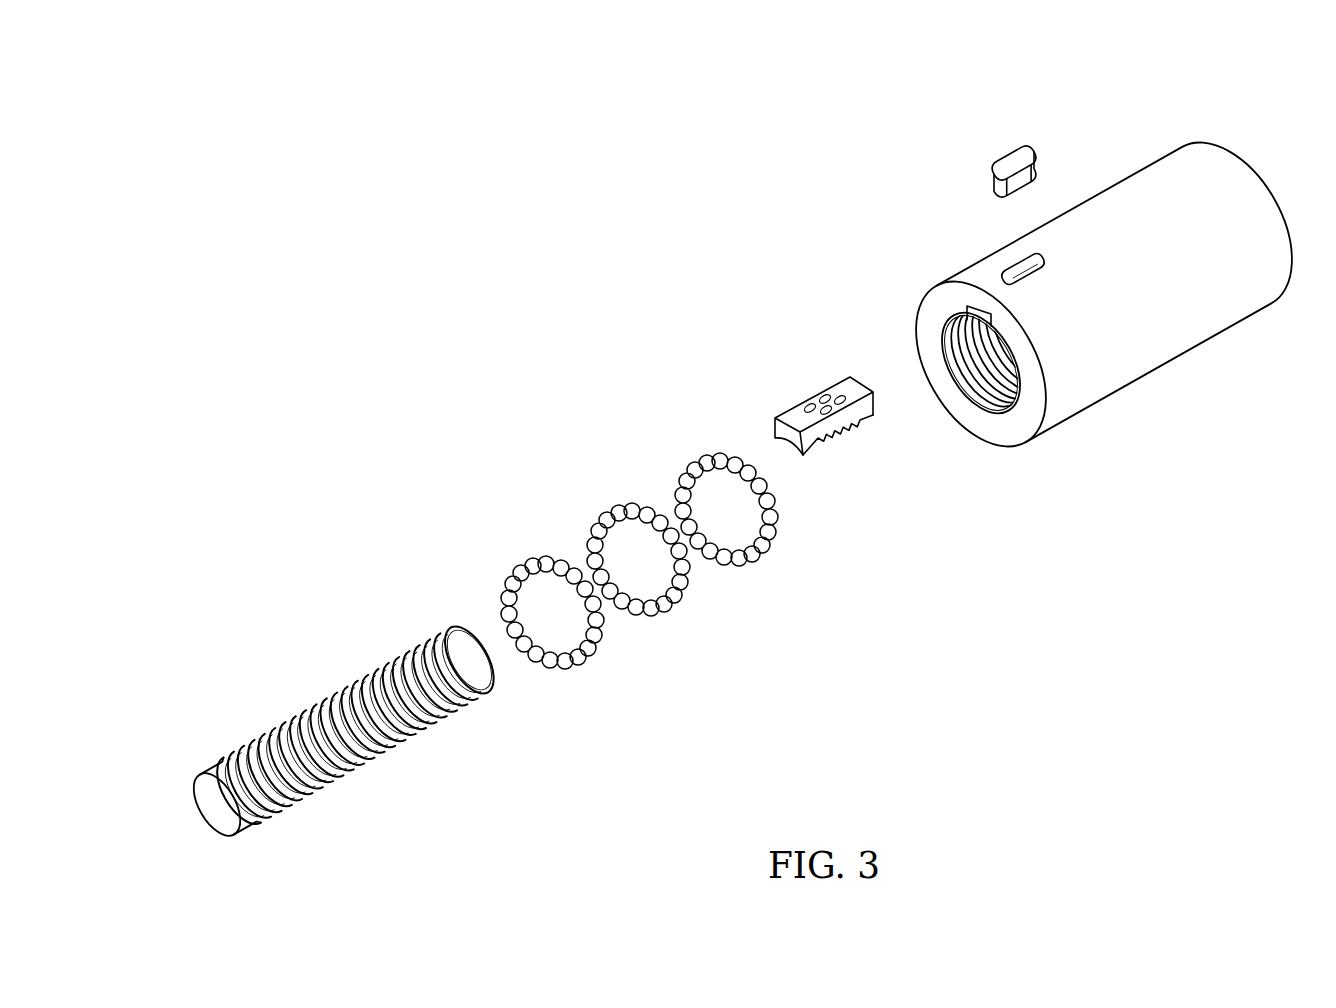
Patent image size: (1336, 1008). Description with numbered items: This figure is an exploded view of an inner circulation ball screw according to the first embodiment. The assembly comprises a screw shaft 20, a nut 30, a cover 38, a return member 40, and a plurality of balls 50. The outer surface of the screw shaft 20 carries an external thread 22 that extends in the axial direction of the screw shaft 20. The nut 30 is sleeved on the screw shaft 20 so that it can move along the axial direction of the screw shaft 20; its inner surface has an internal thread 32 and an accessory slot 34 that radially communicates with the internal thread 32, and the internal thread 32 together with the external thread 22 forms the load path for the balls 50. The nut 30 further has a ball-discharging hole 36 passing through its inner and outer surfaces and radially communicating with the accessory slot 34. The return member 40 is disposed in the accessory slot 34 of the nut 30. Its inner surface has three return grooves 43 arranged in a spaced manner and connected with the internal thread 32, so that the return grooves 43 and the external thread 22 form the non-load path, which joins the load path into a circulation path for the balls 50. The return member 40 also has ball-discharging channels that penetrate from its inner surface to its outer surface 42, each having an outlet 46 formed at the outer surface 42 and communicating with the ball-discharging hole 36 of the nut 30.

The screw shaft 20 is at (306, 717).
The external thread 22 is at (327, 697).
The nut 30 is at (1073, 255).
The internal thread 32 is at (983, 357).
The accessory slot 34 is at (983, 322).
The ball-discharging hole 36 is at (1031, 263).
The cover 38 is at (1013, 166).
The return member 40 is at (781, 418).
The outer surface 42 is at (790, 416).
The return grooves 43 is at (822, 443).
The outlet 46 is at (825, 397).
The balls 50 is at (683, 465).